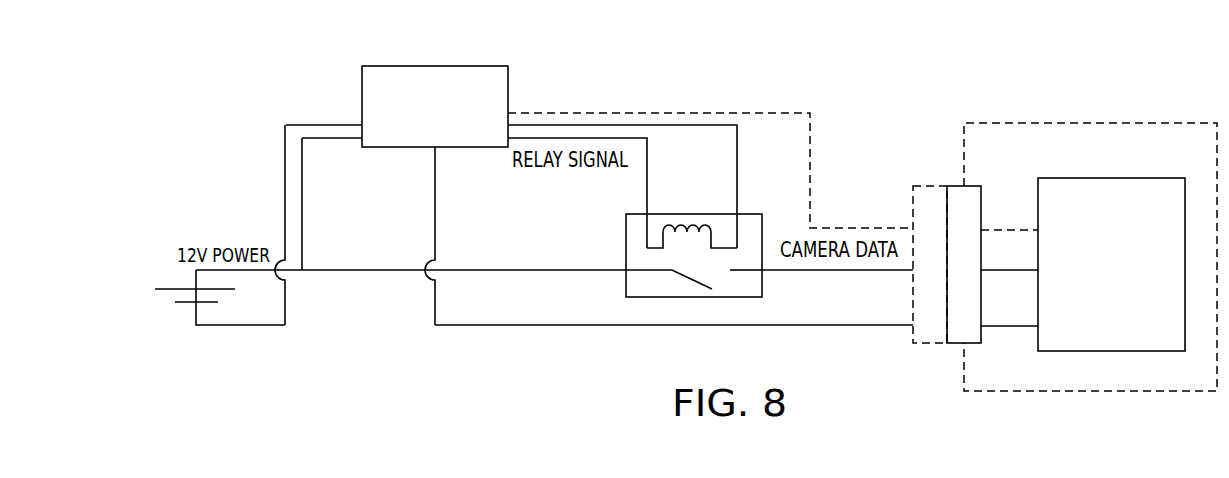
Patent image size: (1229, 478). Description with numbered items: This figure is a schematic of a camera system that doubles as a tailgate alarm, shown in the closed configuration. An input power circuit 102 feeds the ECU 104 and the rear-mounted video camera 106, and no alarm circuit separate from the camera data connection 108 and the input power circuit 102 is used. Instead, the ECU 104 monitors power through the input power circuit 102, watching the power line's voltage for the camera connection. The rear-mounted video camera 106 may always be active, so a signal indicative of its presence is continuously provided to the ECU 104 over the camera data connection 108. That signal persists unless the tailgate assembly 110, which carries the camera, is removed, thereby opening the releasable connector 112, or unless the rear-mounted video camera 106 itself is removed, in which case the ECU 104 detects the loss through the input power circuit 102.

The input power circuit 102 is at (197, 342).
The ECU 104 is at (433, 72).
The rear-mounted video camera 106 is at (1112, 182).
The camera data connection 108 is at (810, 160).
The tailgate assembly 110 is at (1162, 122).
The releasable connector 112 is at (930, 344).